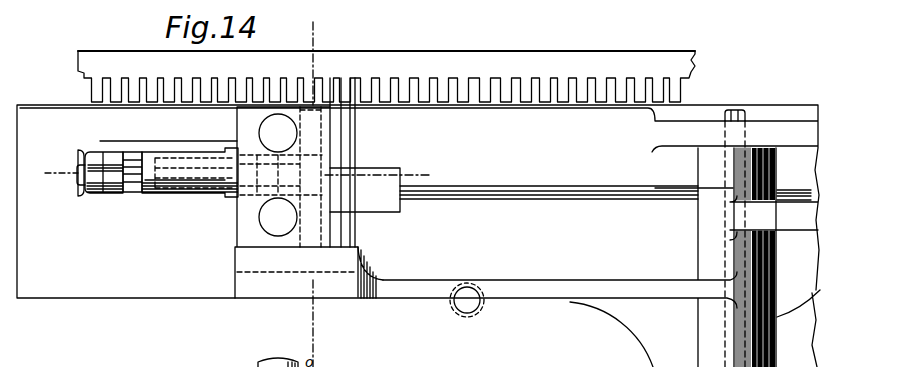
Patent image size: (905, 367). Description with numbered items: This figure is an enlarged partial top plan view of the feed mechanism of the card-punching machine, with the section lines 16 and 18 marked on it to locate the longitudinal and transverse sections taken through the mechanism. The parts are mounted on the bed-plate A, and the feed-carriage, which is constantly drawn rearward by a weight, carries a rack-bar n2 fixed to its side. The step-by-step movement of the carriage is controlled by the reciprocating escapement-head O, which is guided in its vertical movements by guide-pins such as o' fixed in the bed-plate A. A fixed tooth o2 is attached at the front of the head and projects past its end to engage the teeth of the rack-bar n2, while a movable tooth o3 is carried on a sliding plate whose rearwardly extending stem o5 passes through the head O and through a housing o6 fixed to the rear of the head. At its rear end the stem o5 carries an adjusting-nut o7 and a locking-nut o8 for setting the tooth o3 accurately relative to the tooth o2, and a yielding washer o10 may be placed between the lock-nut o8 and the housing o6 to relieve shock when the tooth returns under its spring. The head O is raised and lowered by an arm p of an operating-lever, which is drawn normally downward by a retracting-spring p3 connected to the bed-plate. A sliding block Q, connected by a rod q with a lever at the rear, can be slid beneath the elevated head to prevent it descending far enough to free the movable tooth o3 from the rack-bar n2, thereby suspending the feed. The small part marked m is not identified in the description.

The bed-plate A is at (418, 236).
The rack-bar n2 is at (386, 76).
The section line 18 18 is at (314, 184).
The fixed tooth o2 is at (352, 129).
The escapement-head O is at (235, 224).
The guide-pin o' is at (278, 175).
The movable tooth o3 is at (357, 128).
The sliding block Q is at (378, 190).
The rod q is at (578, 198).
The section line 16 16 is at (237, 173).
The lever m is at (180, 134).
The locking-nut o8 is at (112, 194).
The adjusting-nut o7 is at (85, 196).
The washer o10 is at (128, 152).
The housing o6 is at (186, 196).
The stem o5 is at (150, 186).
The arm p is at (527, 290).
The retracting-spring p3 is at (470, 313).